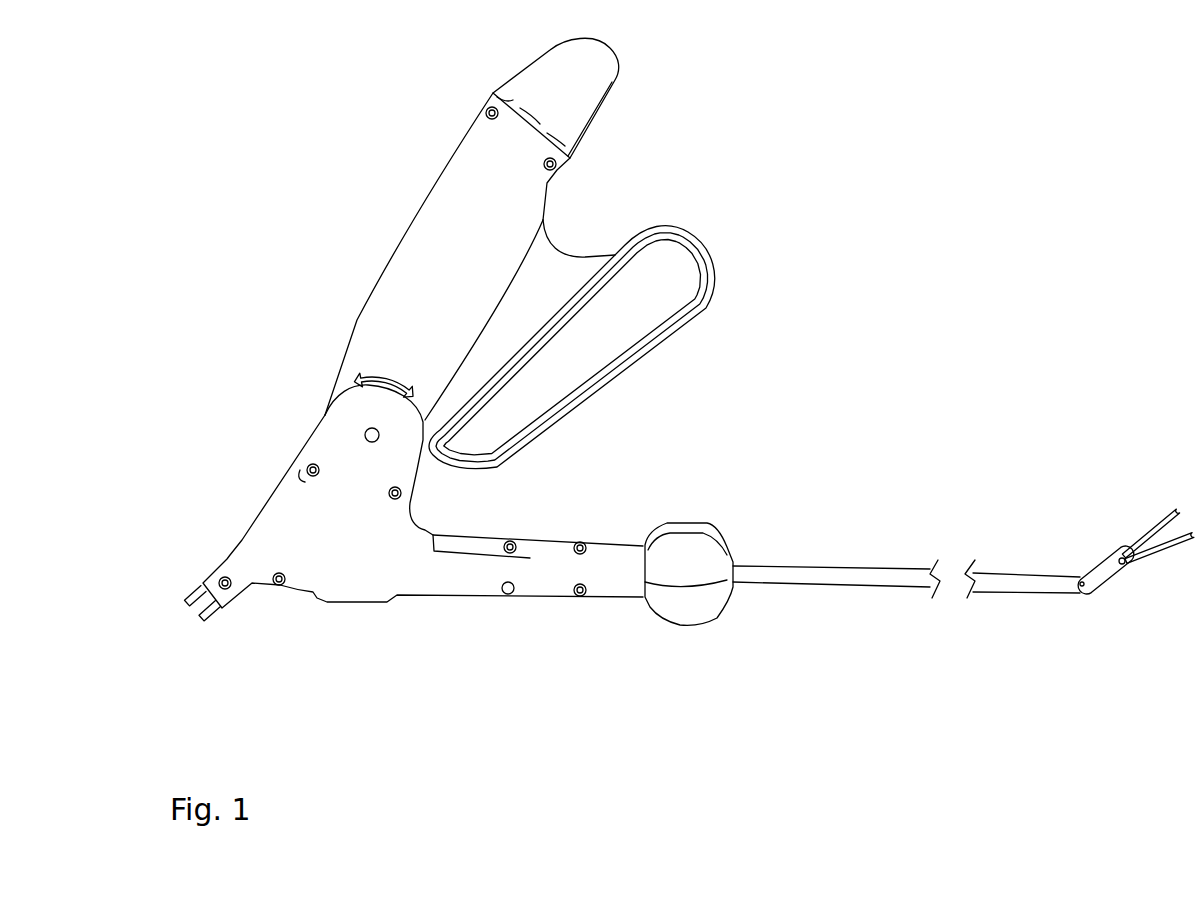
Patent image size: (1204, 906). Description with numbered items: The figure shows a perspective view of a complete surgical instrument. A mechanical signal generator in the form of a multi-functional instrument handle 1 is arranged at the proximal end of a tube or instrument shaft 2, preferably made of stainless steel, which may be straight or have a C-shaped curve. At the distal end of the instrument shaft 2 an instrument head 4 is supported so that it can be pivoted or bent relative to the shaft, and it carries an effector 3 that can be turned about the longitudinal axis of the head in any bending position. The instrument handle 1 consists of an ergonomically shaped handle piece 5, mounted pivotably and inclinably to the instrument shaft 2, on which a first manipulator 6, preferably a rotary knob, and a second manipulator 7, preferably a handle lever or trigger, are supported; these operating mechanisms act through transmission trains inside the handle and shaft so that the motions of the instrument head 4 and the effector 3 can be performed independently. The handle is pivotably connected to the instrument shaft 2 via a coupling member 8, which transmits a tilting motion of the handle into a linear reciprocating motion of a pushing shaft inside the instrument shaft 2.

The instrument handle 1 is at (370, 169).
The instrument shaft 2 is at (859, 543).
The effector 3 is at (1133, 563).
The instrument head 4 is at (1107, 521).
The handle piece 5 is at (382, 291).
The first manipulator 6 is at (612, 77).
The second manipulator 7 is at (692, 220).
The coupling member 8 is at (308, 510).